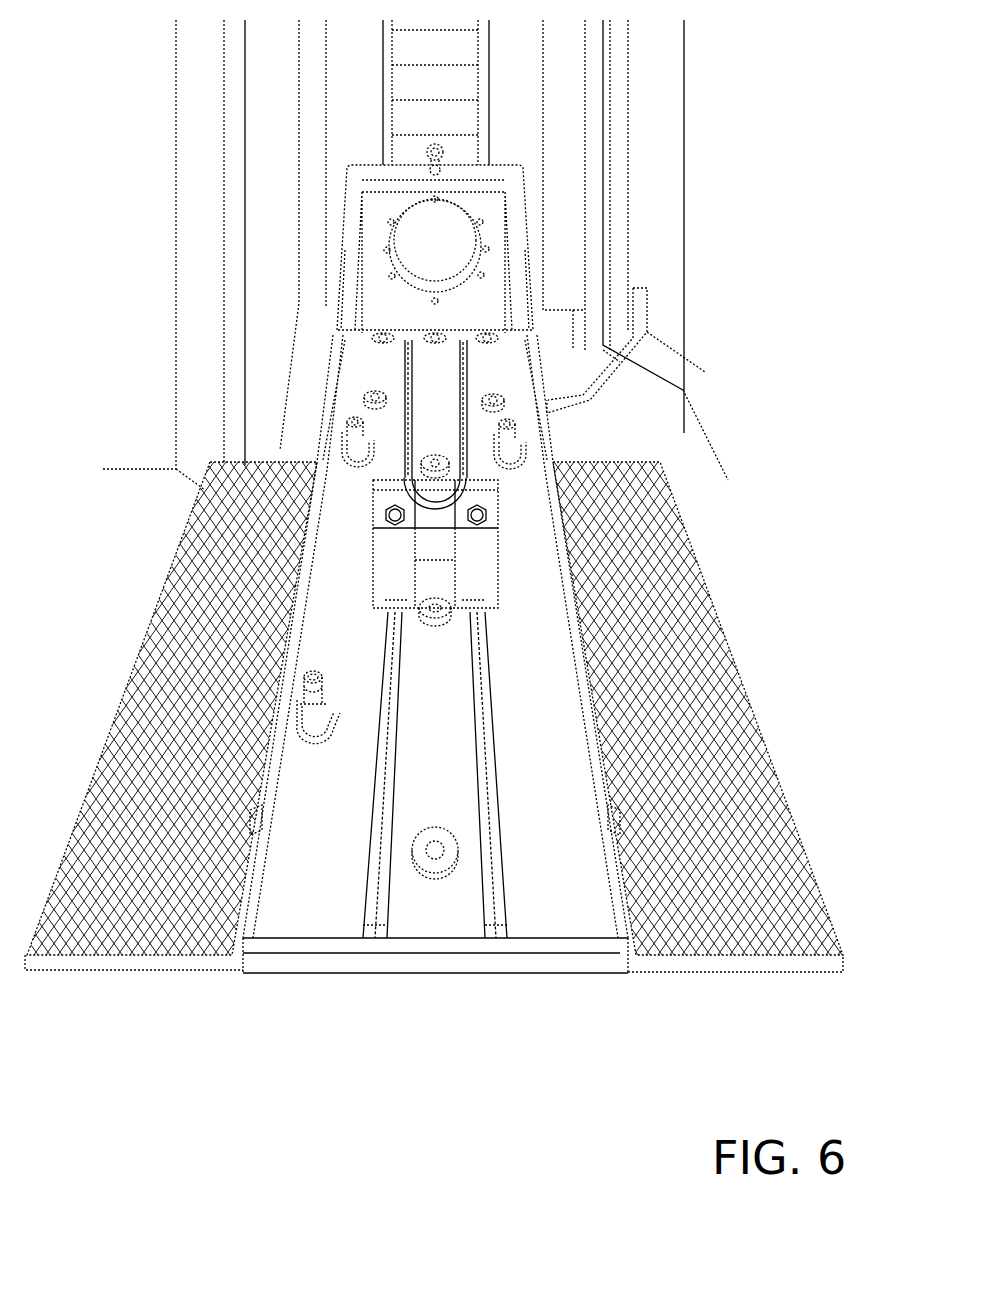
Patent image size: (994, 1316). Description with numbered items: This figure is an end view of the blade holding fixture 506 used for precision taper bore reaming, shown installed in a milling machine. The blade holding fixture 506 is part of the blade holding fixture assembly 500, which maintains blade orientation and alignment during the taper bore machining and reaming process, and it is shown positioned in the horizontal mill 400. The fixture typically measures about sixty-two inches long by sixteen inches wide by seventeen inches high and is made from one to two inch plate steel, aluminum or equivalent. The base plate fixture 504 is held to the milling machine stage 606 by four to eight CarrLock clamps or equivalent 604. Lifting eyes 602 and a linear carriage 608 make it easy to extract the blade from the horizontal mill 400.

The horizontal mill 400 is at (415, 255).
The blade holding fixture assembly 500 is at (295, 897).
The base plate fixture 504 is at (435, 935).
The blade holding fixture 506 is at (367, 207).
The lifting eyes 602 is at (440, 159).
The clamps 604 is at (367, 325).
The milling machine stage 606 is at (500, 975).
The linear carriage 608 is at (480, 670).